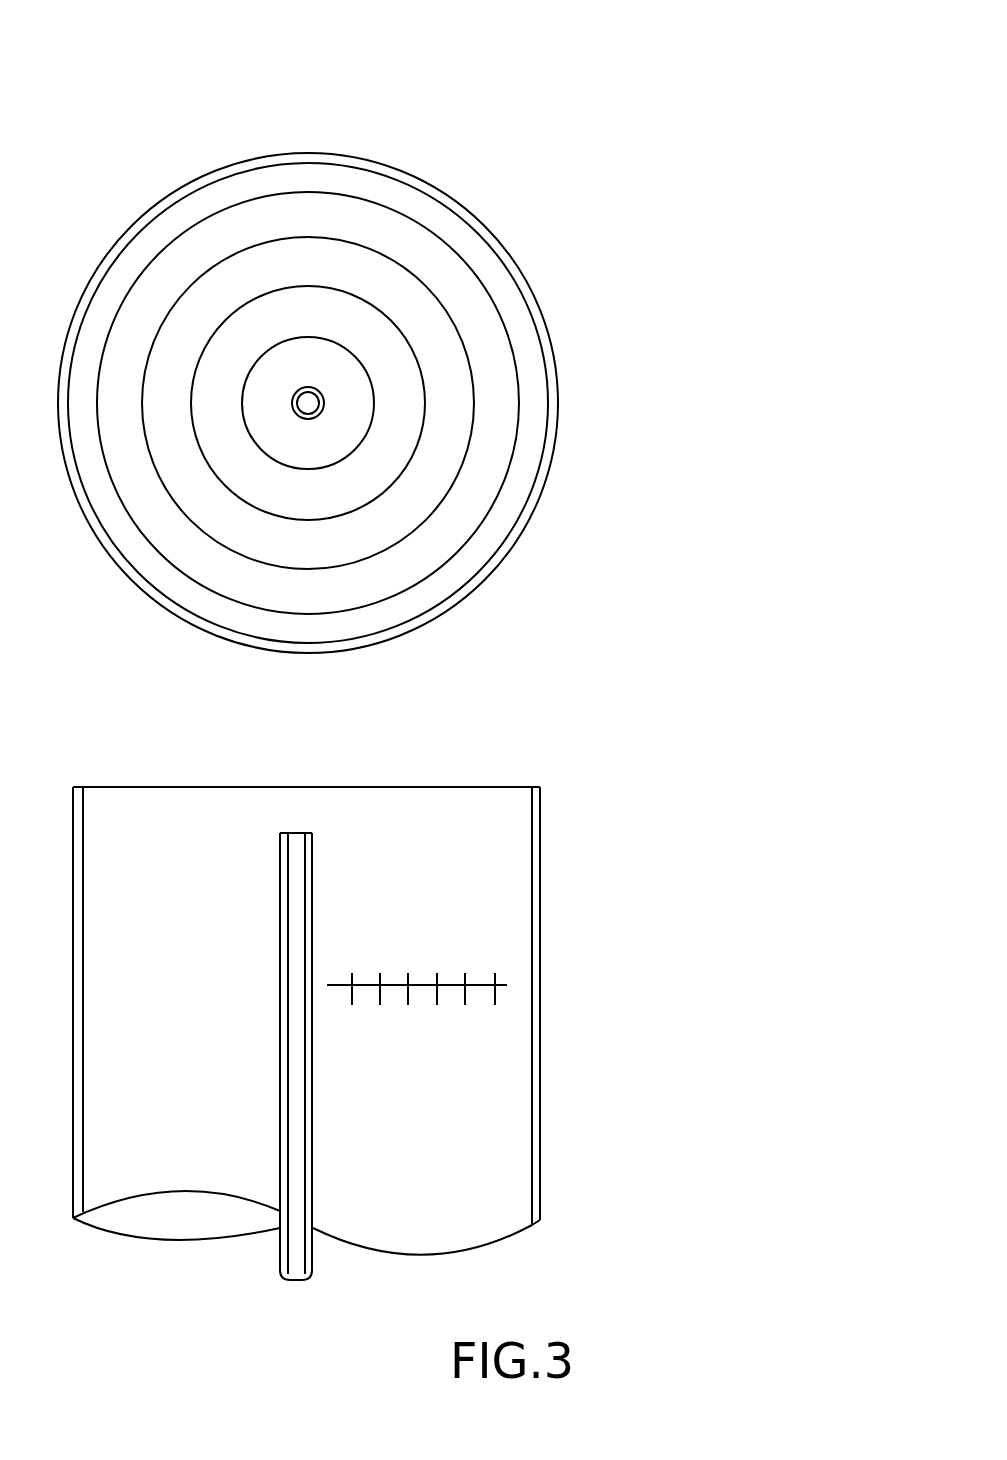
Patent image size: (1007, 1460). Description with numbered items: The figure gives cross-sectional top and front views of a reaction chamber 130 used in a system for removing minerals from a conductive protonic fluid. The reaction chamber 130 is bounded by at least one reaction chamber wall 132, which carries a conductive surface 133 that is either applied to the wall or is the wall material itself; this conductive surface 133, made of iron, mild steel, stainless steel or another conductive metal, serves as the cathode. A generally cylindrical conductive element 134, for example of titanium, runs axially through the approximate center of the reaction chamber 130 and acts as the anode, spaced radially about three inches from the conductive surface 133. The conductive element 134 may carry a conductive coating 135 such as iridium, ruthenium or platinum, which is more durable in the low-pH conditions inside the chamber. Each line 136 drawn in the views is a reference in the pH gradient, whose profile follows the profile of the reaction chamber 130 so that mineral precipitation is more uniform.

The reaction chamber 130 is at (794, 32).
The reaction chamber wall 132 is at (590, 390).
The conductive surface 133 is at (446, 227).
The conductive element 134 is at (281, 386).
The conductive coating 135 is at (327, 386).
The line 136 is at (289, 336).